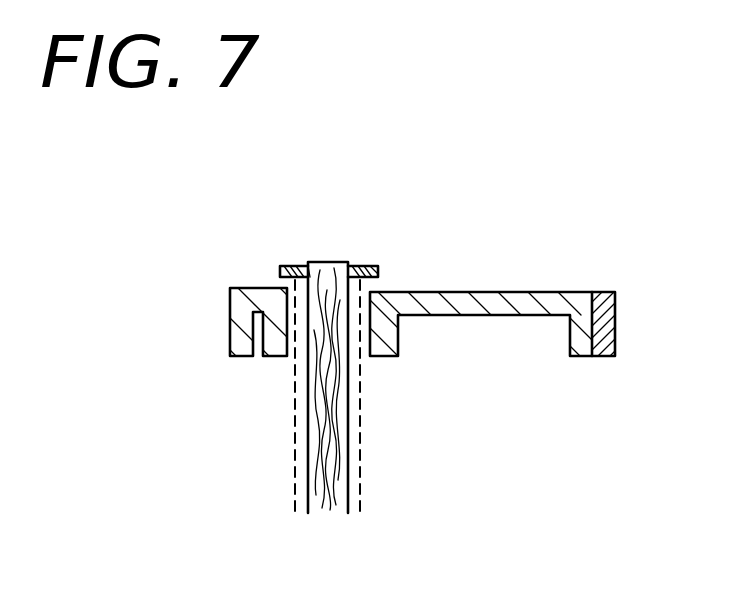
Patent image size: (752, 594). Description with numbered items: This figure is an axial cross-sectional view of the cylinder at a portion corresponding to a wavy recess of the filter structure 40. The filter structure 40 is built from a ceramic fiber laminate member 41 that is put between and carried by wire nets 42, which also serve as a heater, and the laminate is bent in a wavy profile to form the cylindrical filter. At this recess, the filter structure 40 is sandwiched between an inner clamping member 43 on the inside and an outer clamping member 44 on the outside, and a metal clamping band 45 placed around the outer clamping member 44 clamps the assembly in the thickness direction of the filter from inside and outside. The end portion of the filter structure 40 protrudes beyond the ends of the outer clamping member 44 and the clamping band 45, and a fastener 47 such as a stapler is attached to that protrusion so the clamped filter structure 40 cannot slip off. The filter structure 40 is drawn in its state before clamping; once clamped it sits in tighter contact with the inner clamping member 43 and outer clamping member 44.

The filter structure 40 is at (348, 485).
The ceramic fiber laminate member 41 is at (328, 272).
The wire nets 42 is at (360, 437).
The inner clamping member 43 is at (238, 310).
The outer clamping member 44 is at (498, 300).
The clamping band 45 is at (615, 316).
The fastener 47 is at (296, 267).